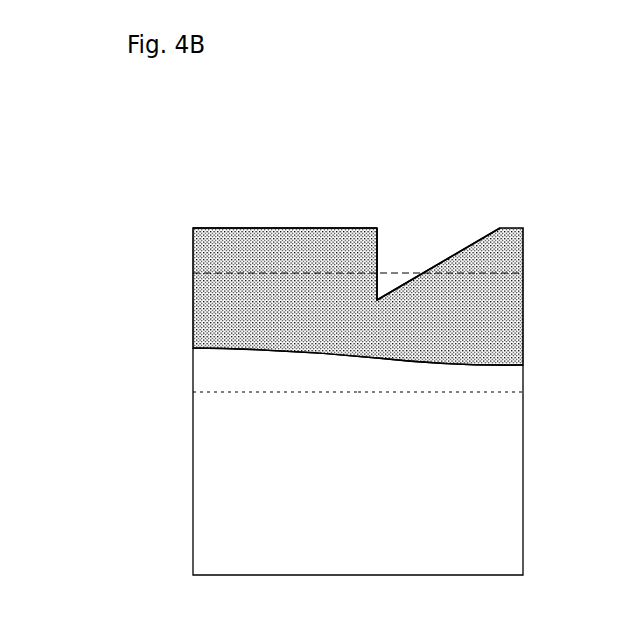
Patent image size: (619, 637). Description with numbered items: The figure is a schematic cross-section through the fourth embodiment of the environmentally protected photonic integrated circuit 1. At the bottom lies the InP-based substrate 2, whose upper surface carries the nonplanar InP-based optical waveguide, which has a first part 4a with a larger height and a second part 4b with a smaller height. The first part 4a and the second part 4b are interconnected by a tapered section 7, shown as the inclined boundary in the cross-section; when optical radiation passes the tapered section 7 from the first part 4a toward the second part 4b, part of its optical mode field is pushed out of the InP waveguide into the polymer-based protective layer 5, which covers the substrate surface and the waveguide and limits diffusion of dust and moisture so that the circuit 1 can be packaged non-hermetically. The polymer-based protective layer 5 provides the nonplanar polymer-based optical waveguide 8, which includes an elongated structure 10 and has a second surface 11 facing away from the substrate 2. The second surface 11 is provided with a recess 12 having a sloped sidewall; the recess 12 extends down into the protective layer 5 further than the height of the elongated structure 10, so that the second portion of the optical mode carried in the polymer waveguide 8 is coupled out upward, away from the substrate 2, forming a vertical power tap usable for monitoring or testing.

The photonic integrated circuit 1 is at (412, 110).
The InP-based substrate 2 is at (470, 505).
The first part of the waveguide 4a is at (232, 371).
The second part of the waveguide 4b is at (507, 377).
The polymer-based protective layer 5 is at (212, 325).
The tapered section 7 is at (378, 375).
The nonplanar polymer-based optical waveguide 8 is at (247, 205).
The elongated structure 10 is at (212, 258).
The second surface 11 is at (293, 227).
The recess 12 is at (413, 248).